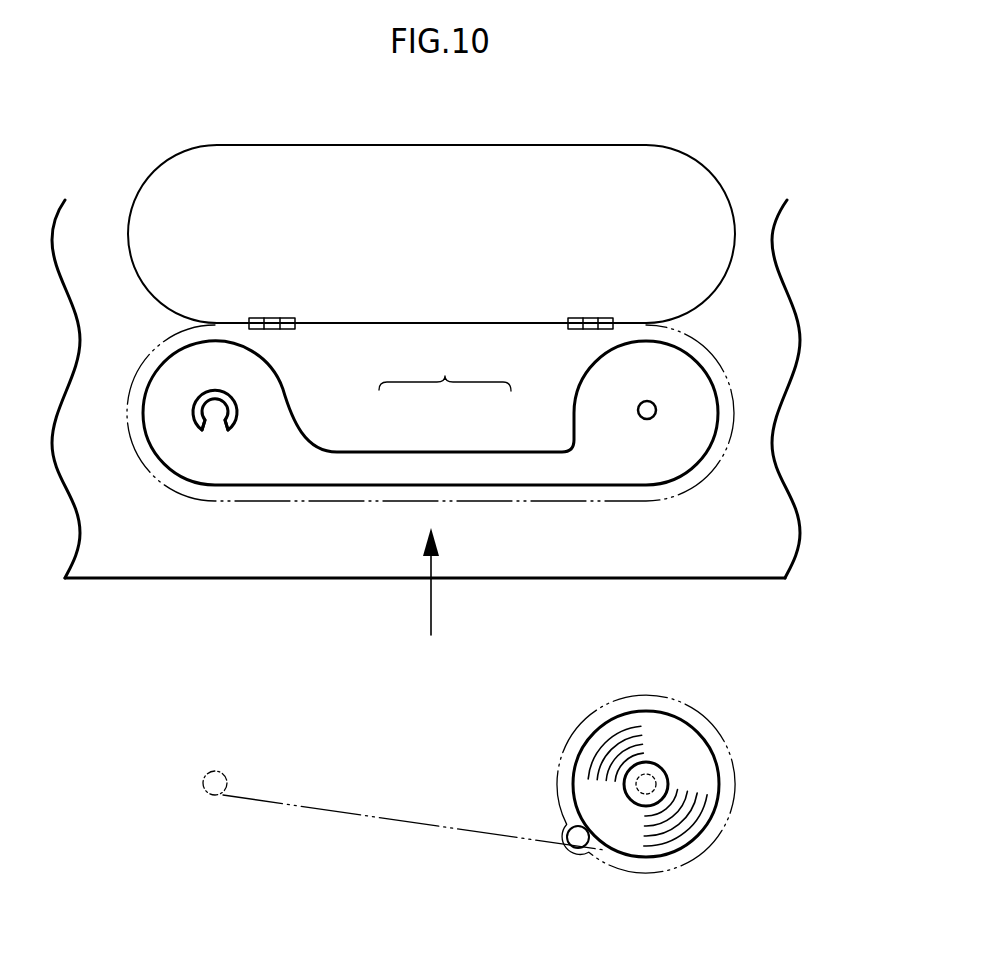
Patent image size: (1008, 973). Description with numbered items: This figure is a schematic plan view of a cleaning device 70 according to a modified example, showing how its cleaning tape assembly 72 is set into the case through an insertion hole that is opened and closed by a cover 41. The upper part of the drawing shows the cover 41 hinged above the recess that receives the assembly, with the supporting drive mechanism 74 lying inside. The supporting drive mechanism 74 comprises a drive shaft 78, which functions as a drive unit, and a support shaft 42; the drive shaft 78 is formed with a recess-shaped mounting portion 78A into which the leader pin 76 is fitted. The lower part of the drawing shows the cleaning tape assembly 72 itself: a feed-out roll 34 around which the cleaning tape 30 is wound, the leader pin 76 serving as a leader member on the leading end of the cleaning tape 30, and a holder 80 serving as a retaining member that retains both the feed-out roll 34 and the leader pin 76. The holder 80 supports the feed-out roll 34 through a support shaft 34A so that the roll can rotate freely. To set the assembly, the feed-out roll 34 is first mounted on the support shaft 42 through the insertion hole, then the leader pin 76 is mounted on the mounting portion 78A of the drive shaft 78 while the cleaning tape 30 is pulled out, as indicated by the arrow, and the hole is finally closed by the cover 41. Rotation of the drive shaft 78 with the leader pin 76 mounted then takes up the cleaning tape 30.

The cover 41 is at (511, 161).
The holder 80 is at (498, 484).
The supporting drive mechanism 74 is at (445, 367).
The drive shaft 78 is at (237, 409).
The mounting portion 78A is at (214, 428).
The support shaft 42 is at (637, 411).
The cleaning tape 30 is at (368, 818).
The leader pin 76 is at (219, 779).
The feed-out roll 34 is at (664, 770).
The support shaft 34A is at (650, 773).
The cleaning tape assembly 72 is at (742, 715).
The cleaning device 70 is at (706, 776).